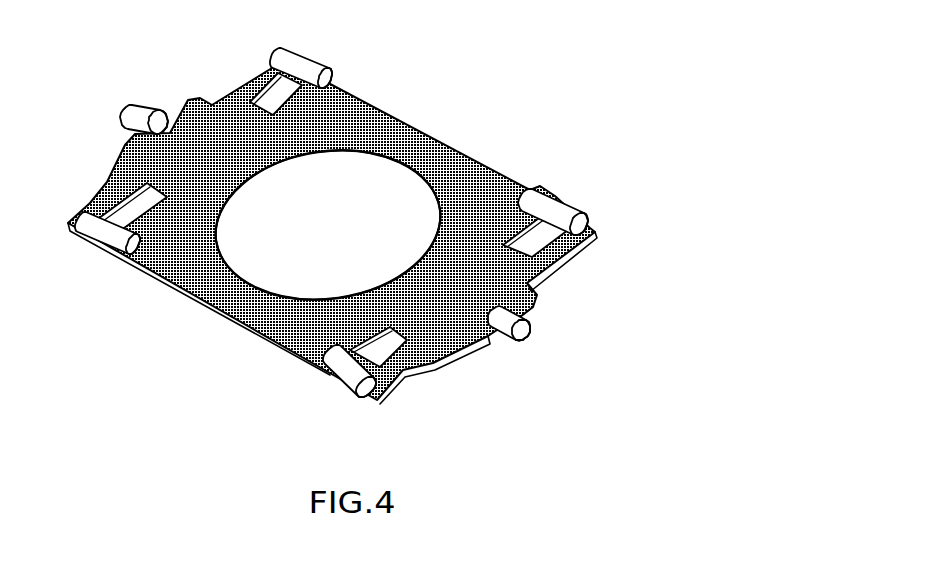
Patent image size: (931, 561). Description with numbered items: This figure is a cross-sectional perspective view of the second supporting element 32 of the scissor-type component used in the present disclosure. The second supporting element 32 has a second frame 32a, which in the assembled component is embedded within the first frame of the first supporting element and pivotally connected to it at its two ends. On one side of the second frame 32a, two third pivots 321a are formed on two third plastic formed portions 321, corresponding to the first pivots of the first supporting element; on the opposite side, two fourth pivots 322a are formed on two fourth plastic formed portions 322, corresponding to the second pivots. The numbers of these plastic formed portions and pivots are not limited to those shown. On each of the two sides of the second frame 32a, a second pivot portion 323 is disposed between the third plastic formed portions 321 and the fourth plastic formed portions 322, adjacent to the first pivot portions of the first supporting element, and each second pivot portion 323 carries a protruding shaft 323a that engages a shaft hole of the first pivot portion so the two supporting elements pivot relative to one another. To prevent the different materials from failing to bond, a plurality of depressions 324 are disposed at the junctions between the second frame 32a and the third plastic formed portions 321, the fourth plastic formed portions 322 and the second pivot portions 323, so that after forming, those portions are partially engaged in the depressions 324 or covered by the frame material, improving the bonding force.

The second supporting element 32 is at (467, 121).
The second frame 32a is at (380, 117).
The third plastic formed portion 321 is at (337, 392).
The third pivot 321a is at (337, 373).
The fourth plastic formed portion 322 is at (590, 212).
The fourth pivot 322a is at (557, 210).
The second pivot portion 323 is at (497, 343).
The protruding shaft 323a is at (523, 333).
The depression 324 is at (184, 126).